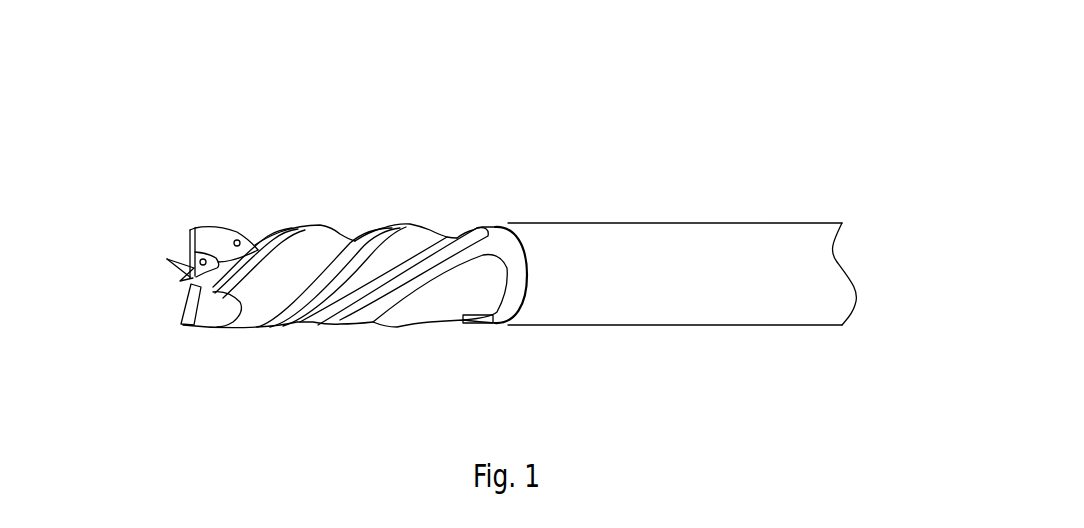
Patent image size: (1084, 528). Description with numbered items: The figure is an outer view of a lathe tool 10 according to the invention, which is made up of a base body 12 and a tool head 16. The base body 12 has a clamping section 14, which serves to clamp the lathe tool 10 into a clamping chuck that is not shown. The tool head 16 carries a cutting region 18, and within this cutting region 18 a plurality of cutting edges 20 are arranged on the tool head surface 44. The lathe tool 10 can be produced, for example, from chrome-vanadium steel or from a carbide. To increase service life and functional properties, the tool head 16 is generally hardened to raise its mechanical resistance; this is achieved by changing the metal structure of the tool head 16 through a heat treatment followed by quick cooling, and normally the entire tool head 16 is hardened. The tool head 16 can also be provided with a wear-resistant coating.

The lathe tool 10 is at (830, 158).
The base body 12 is at (663, 176).
The clamping section 14 is at (665, 310).
The tool head 16 is at (340, 176).
The cutting region 18 is at (205, 313).
The cutting edges 20 is at (190, 238).
The tool head surface 44 is at (172, 280).